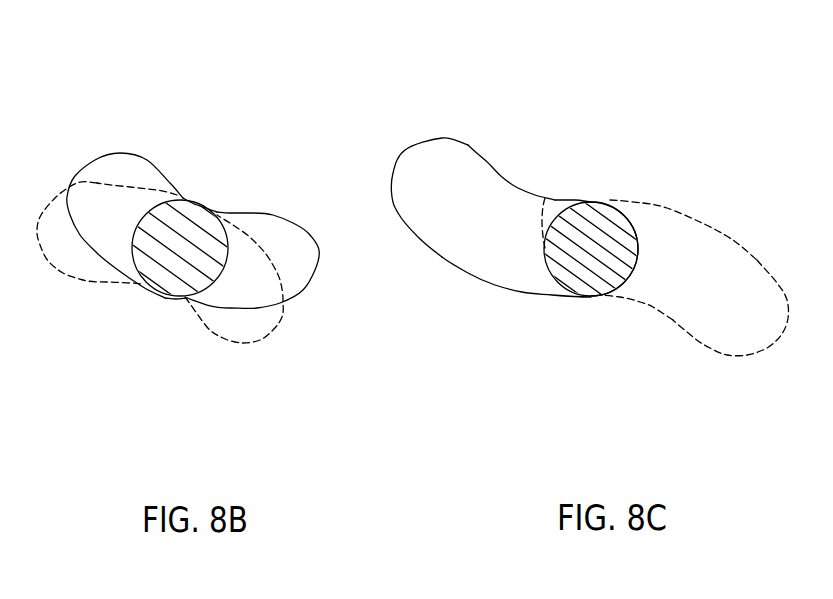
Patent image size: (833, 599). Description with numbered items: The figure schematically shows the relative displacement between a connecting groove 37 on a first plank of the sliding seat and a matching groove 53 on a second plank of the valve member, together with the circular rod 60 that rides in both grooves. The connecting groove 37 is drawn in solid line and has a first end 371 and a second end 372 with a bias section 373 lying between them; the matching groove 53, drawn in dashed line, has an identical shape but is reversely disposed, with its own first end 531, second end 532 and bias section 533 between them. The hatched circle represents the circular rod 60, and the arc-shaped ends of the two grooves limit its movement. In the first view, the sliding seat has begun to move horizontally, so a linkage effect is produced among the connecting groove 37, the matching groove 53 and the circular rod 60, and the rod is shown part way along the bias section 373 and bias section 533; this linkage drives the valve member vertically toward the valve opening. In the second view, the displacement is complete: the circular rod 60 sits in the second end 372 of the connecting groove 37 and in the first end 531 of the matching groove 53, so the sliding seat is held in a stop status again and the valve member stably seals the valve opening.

In FIG. 8B, the connecting groove 37 is at (193, 251).
In FIG. 8C, the connecting groove 37 is at (526, 233).
In FIG. 8B, the first end 371 is at (84, 166).
In FIG. 8C, the first end 371 is at (408, 152).
In FIG. 8B, the second end 372 is at (318, 240).
In FIG. 8C, the second end 372 is at (647, 223).
In FIG. 8B, the bias section 373 is at (200, 203).
In FIG. 8C, the bias section 373 is at (523, 190).
In FIG. 8B, the matching groove 53 is at (162, 276).
In FIG. 8C, the matching groove 53 is at (667, 252).
In FIG. 8B, the first end 531 is at (40, 207).
In FIG. 8C, the first end 531 is at (545, 198).
In FIG. 8B, the second end 532 is at (165, 293).
In FIG. 8C, the second end 532 is at (770, 347).
In FIG. 8B, the bias section 533 is at (200, 203).
In FIG. 8C, the bias section 533 is at (703, 220).
In FIG. 8B, the circular rod 60 is at (152, 260).
In FIG. 8C, the circular rod 60 is at (582, 280).